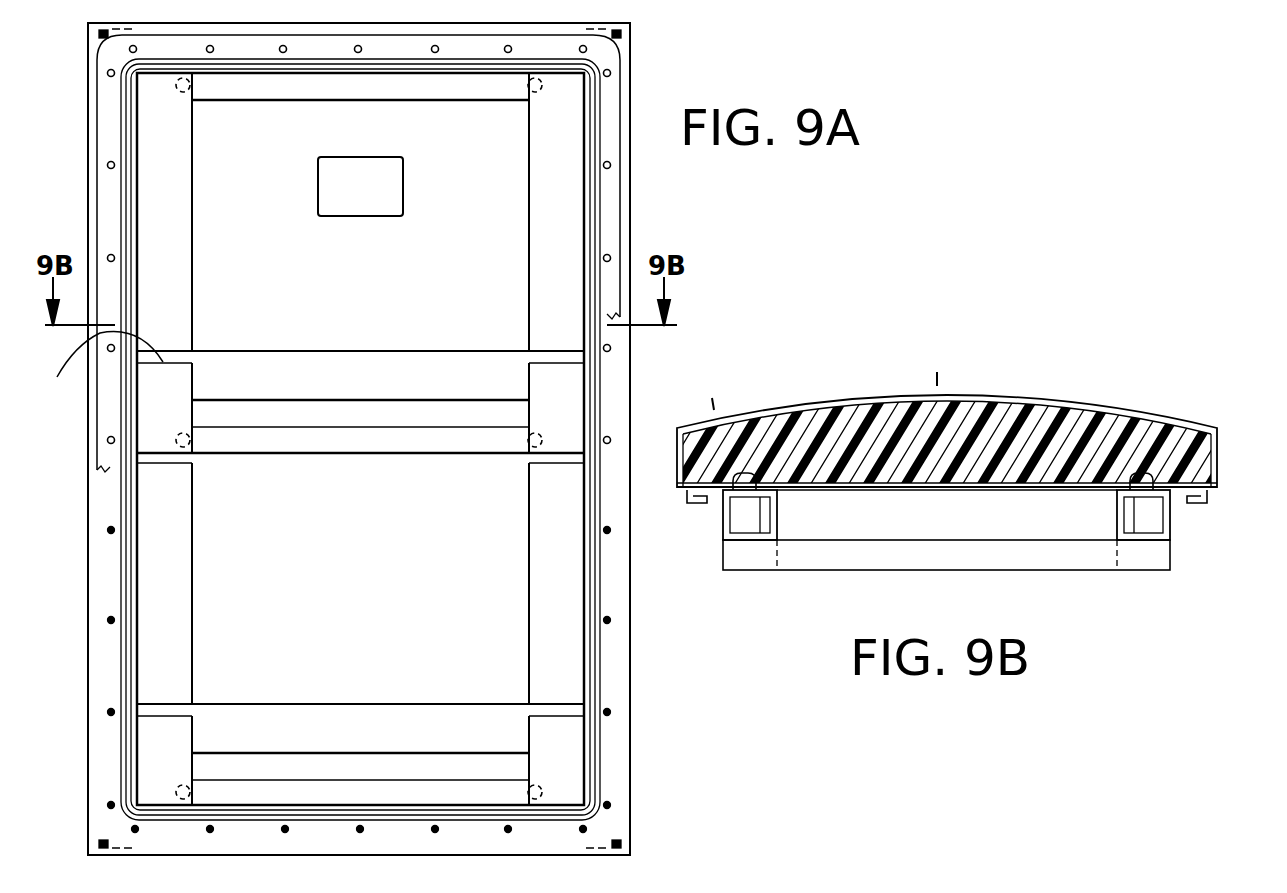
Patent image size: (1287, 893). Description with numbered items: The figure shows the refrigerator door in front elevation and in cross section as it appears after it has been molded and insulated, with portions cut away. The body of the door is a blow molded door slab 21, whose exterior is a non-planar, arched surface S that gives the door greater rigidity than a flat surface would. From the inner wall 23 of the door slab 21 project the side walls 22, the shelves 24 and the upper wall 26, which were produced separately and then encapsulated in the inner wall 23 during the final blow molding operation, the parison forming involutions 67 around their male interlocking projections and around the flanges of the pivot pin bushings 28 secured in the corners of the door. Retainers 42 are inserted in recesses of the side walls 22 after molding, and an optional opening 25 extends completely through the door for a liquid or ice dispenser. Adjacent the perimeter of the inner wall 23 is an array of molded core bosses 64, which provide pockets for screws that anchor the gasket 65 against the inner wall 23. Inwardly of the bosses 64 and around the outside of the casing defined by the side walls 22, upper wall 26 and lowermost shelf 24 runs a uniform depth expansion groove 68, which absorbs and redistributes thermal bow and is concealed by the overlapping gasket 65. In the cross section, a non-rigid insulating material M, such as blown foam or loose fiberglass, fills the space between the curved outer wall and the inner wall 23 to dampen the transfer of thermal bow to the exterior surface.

In FIG. 9A, the door slab 21 is at (632, 762).
In FIG. 9B, the door slab 21 is at (1092, 402).
In FIG. 9A, the side wall 22 is at (96, 375).
In FIG. 9A, the inner wall 23 is at (387, 288).
In FIG. 9B, the inner wall 23 is at (995, 490).
In FIG. 9A, the shelf 24 is at (218, 445).
In FIG. 9B, the shelf 24 is at (930, 535).
In FIG. 9A, the opening 25 is at (330, 180).
In FIG. 9A, the upper wall 26 is at (408, 92).
In FIG. 9A, the pivot pin bushing 28 is at (100, 40).
In FIG. 9A, the retainer 42 is at (408, 356).
In FIG. 9B, the retainer 42 is at (845, 560).
In FIG. 9A, the core boss 64 is at (115, 530).
In FIG. 9B, the core boss 64 is at (826, 374).
In FIG. 9A, the gasket 65 is at (110, 206).
In FIG. 9B, the gasket 65 is at (690, 505).
In FIG. 9B, the involution 67 is at (763, 480).
In FIG. 9A, the expansion groove 68 is at (600, 665).
In FIG. 9B, the expansion groove 68 is at (740, 487).
In FIG. 9B, the arched surface S is at (965, 397).
In FIG. 9B, the non-rigid insulating material M is at (1048, 432).